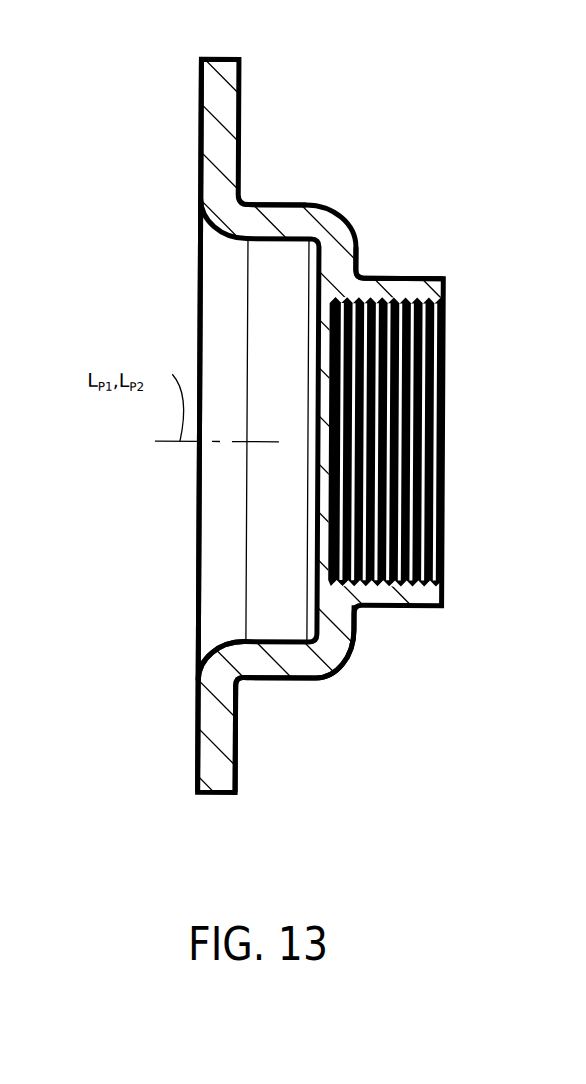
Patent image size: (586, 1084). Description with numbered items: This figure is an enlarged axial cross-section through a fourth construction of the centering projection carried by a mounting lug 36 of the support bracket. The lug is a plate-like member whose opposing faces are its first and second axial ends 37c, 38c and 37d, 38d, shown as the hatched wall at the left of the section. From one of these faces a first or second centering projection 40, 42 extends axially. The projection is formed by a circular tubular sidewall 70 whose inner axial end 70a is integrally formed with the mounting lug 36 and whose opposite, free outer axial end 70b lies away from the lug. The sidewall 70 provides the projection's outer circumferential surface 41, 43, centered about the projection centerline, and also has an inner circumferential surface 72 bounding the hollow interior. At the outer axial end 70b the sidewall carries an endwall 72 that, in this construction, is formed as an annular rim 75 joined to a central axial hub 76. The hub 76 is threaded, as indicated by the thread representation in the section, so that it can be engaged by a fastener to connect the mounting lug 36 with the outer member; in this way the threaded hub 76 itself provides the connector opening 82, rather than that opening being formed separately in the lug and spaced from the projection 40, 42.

The mounting lug 36 is at (282, 93).
The outer circumferential surface 41 is at (310, 153).
The outer circumferential surface 43 is at (288, 203).
The first centering projection 40 is at (444, 355).
The second centering projection 42 is at (428, 182).
The annular rim 75 is at (356, 258).
The central axial hub 76 is at (427, 273).
The connector opening 82 is at (446, 419).
The inner circumferential surface / endwall 72 is at (256, 641).
The tubular sidewall 70 is at (297, 680).
The inner axial end 70a is at (230, 668).
The outer axial end 70b is at (318, 658).
The first axial end 37c is at (120, 428).
The first axial end 38c is at (193, 763).
The second axial end 37d is at (322, 751).
The second axial end 38d is at (237, 773).